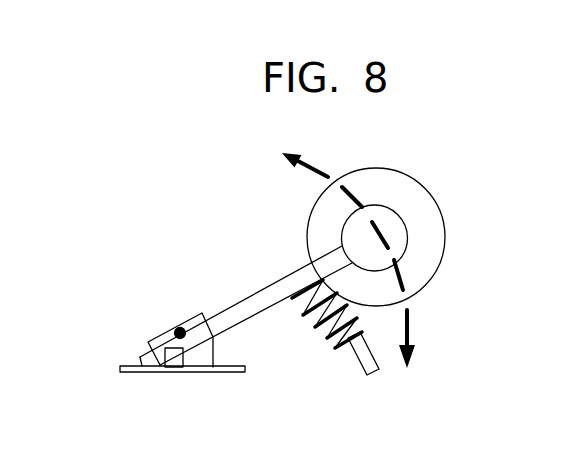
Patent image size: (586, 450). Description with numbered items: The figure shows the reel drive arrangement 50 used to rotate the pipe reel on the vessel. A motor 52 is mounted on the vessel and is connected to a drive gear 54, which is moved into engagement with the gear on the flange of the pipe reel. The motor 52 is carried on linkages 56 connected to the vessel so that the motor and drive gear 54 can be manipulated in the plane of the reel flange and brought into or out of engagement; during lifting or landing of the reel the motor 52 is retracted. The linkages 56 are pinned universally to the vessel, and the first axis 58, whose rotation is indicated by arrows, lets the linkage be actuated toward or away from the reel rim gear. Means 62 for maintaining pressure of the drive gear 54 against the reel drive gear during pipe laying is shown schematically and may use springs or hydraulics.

The reel drive arrangement 50 is at (413, 234).
The motor 52 is at (436, 272).
The drive gear 54 is at (403, 218).
The linkages 56 is at (222, 284).
The first axis 58 is at (180, 328).
The means for maintaining pressure 62 is at (320, 375).